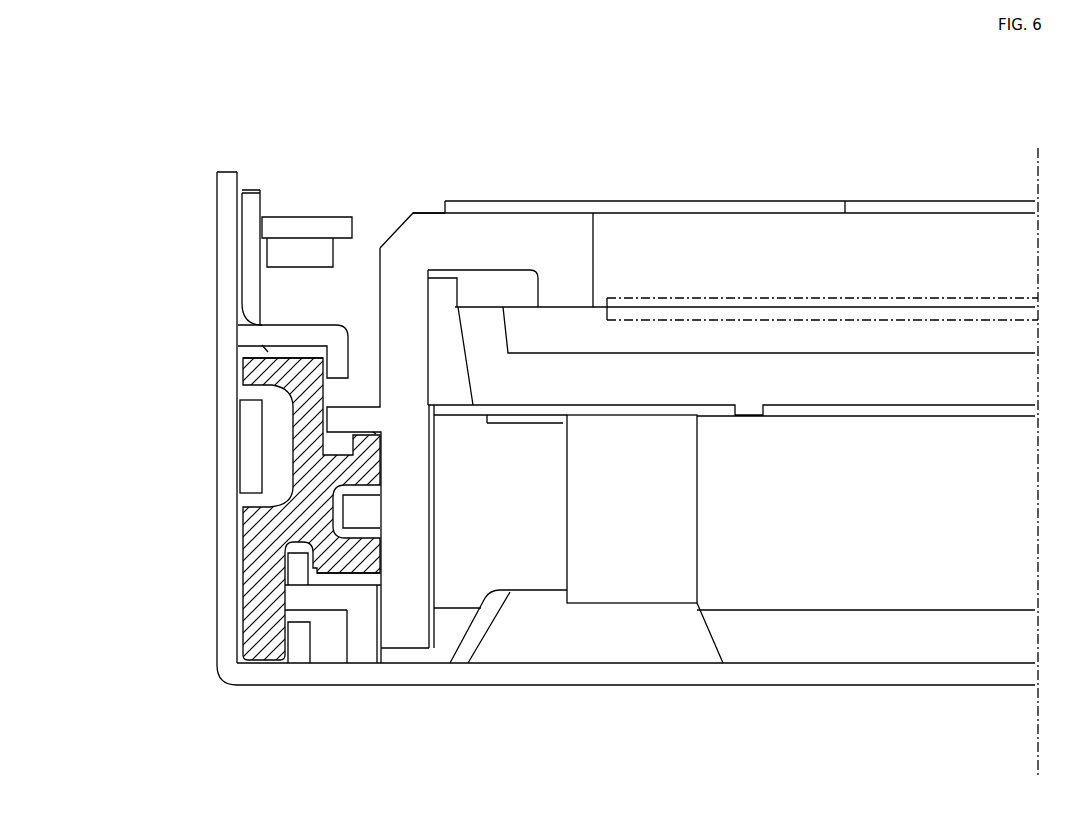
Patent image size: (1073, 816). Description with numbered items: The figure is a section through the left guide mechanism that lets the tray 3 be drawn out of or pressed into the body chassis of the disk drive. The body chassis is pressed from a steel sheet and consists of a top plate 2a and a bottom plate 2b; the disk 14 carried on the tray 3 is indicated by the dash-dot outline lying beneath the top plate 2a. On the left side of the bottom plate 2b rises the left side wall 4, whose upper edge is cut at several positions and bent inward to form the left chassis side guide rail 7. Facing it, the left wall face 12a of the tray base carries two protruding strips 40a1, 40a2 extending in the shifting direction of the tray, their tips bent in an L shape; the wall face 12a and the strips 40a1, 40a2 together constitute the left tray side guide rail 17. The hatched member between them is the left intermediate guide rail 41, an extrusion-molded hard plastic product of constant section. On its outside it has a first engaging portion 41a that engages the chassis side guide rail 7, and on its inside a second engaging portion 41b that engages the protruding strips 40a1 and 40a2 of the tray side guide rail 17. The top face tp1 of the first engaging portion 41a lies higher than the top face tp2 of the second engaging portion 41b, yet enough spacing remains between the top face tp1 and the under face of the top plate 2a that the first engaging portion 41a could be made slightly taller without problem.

The top plate 2a is at (685, 208).
The bottom plate 2b is at (693, 673).
The tray 3 is at (757, 365).
The left side wall 4 is at (223, 588).
The left chassis side guide rail 7 is at (305, 333).
The left wall face 12a is at (410, 557).
The disk 14 is at (893, 303).
The left tray side guide rail 17 is at (421, 530).
The protruding strip 40a1 is at (362, 420).
The protruding strip 40a2 is at (330, 603).
The left intermediate guide rail 41 is at (243, 516).
The first engaging portion 41a is at (247, 368).
The second engaging portion 41b is at (372, 572).
The top face of the first engaging portion tp1 is at (268, 352).
The top face of the second engaging portion tp2 is at (373, 432).